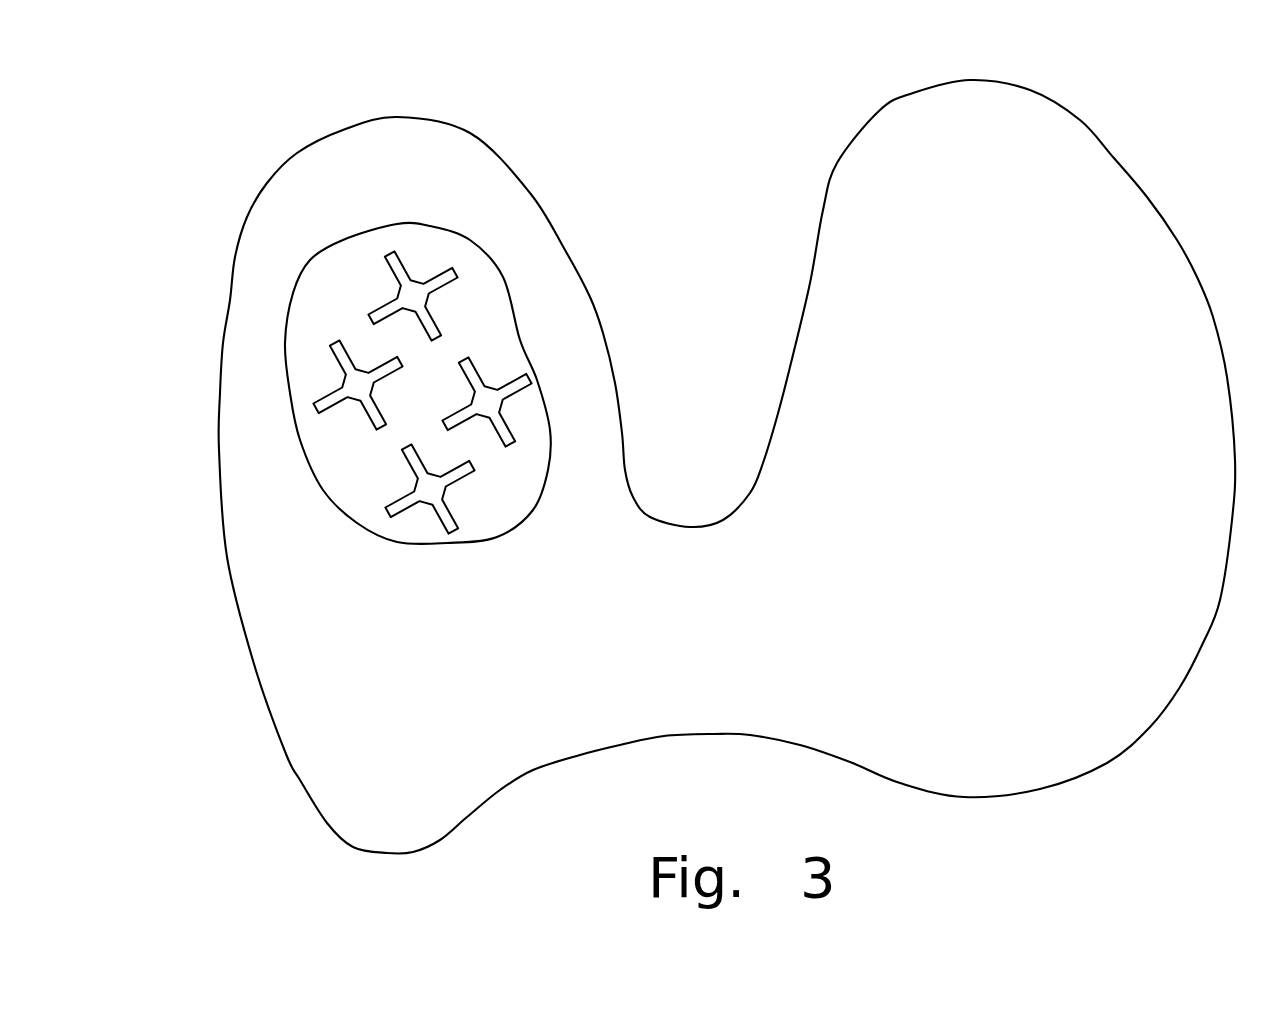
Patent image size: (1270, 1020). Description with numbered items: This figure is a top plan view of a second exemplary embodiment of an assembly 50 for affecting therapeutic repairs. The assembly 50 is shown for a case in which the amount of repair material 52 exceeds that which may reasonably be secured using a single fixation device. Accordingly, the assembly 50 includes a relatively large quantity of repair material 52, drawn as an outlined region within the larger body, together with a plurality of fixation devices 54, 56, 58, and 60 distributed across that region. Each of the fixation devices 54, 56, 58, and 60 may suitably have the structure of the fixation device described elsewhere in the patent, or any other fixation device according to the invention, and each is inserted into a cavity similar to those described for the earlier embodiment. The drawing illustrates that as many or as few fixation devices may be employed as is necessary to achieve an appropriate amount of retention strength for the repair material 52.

The assembly 50 is at (284, 483).
The repair material 52 is at (500, 313).
The fixation device 54 is at (424, 285).
The fixation device 56 is at (351, 360).
The fixation device 58 is at (405, 512).
The fixation device 60 is at (478, 421).